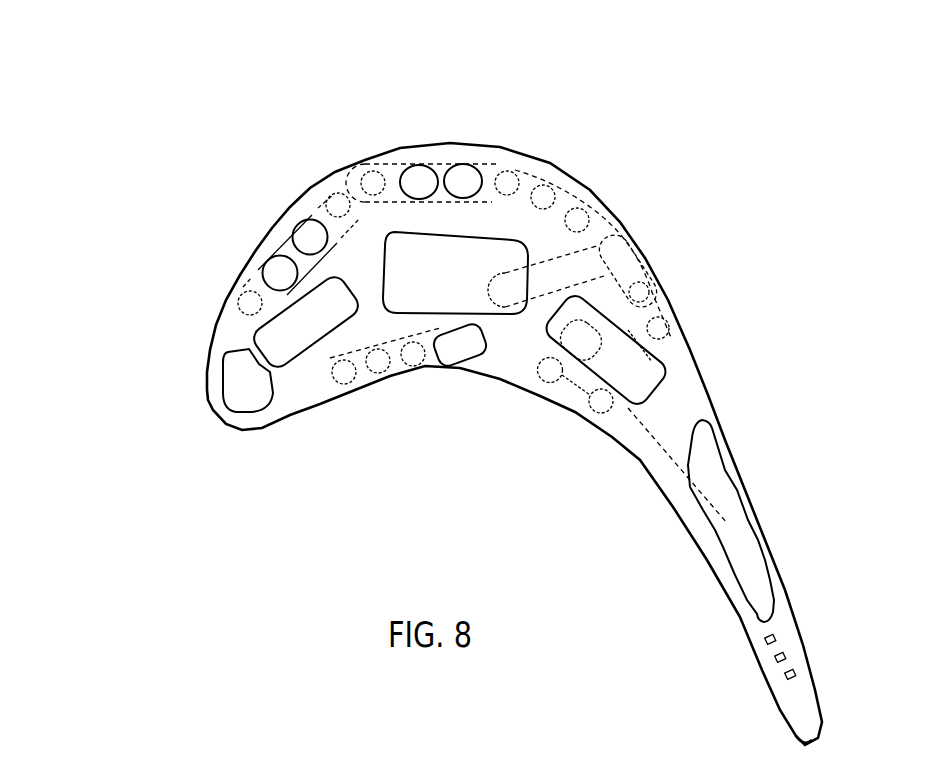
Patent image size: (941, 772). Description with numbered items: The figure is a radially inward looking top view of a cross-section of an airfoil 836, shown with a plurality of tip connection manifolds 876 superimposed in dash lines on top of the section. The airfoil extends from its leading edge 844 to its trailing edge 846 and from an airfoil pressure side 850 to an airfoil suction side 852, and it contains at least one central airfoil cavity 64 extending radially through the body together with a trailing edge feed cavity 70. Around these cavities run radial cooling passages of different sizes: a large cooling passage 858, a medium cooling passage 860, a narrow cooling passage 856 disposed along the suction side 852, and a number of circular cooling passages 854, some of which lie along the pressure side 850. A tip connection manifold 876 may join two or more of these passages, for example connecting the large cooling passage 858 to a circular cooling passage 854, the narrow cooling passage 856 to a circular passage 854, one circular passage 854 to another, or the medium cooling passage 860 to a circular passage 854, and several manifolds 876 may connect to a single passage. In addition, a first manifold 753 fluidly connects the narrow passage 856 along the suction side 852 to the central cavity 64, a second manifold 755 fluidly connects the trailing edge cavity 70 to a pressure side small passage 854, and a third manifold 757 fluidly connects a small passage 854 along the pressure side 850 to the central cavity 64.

The airfoil 836 is at (436, 376).
The leading edge 844 is at (209, 398).
The trailing edge 846 is at (820, 724).
The central cavity 64 is at (388, 300).
The trailing edge feed cavity 70 is at (763, 562).
The tip connection manifolds 876 is at (390, 149).
The large cooling passage 858 is at (435, 190).
The circular cooling passage 854 is at (548, 195).
The airfoil suction side 852 is at (614, 222).
The first manifold 753 is at (598, 242).
The narrow cooling passage 856 is at (642, 268).
The third manifold 757 is at (567, 352).
The airfoil pressure side 850 is at (547, 376).
The medium cooling passage 860 is at (448, 375).
The second manifold 755 is at (690, 413).